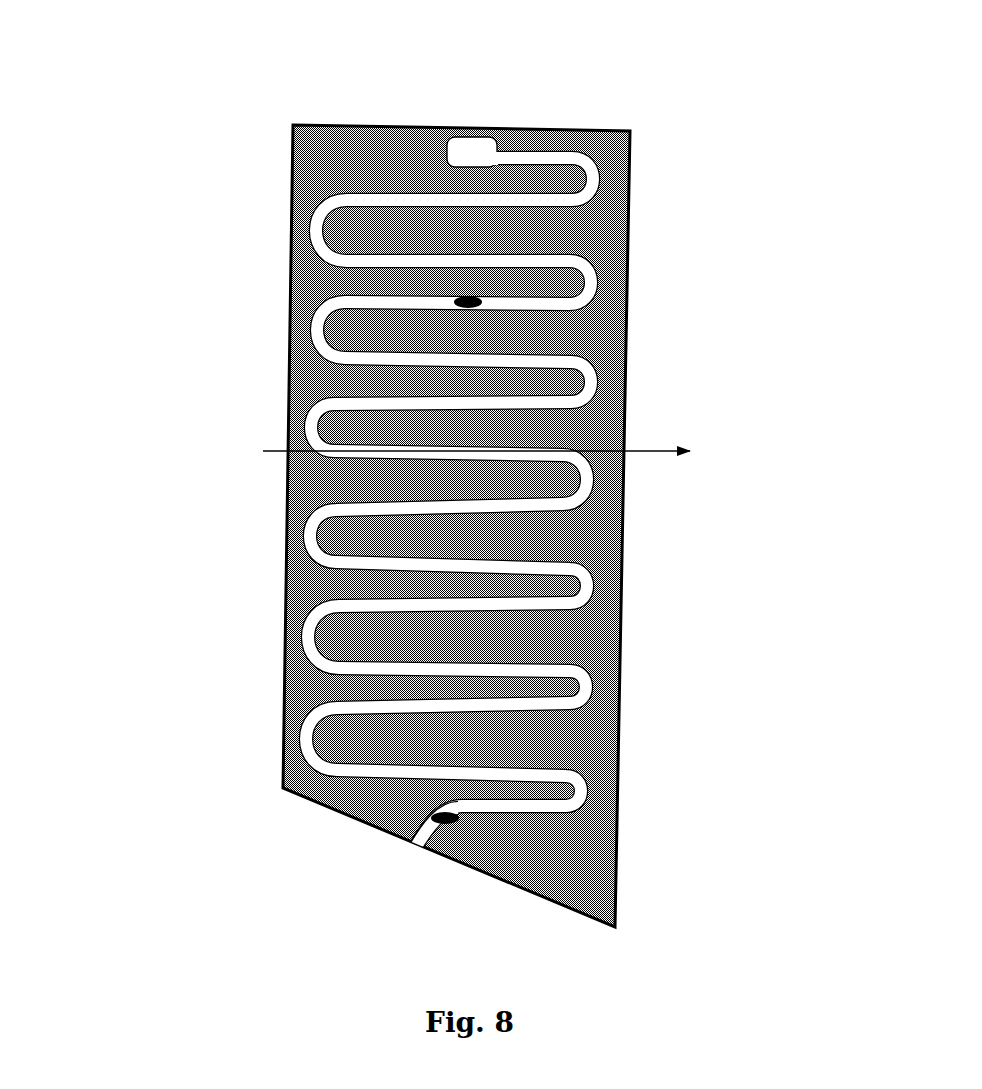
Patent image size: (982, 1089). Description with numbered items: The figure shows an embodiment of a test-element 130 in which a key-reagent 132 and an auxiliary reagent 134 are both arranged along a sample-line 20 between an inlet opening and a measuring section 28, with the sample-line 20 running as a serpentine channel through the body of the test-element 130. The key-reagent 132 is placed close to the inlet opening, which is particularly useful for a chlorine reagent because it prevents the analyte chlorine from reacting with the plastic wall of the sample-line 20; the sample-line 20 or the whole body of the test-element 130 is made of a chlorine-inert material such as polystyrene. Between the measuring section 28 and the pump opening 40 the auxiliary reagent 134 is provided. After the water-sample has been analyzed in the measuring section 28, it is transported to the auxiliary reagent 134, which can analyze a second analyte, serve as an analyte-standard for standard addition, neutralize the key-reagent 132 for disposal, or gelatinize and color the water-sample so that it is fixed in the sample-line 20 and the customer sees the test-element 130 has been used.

The test-element 130 is at (738, 200).
The sample-line 20 is at (568, 715).
The pump opening 40 is at (468, 155).
The auxiliary reagent 134 is at (456, 305).
The key-reagent 132 is at (460, 822).
The measuring section 28 is at (437, 462).